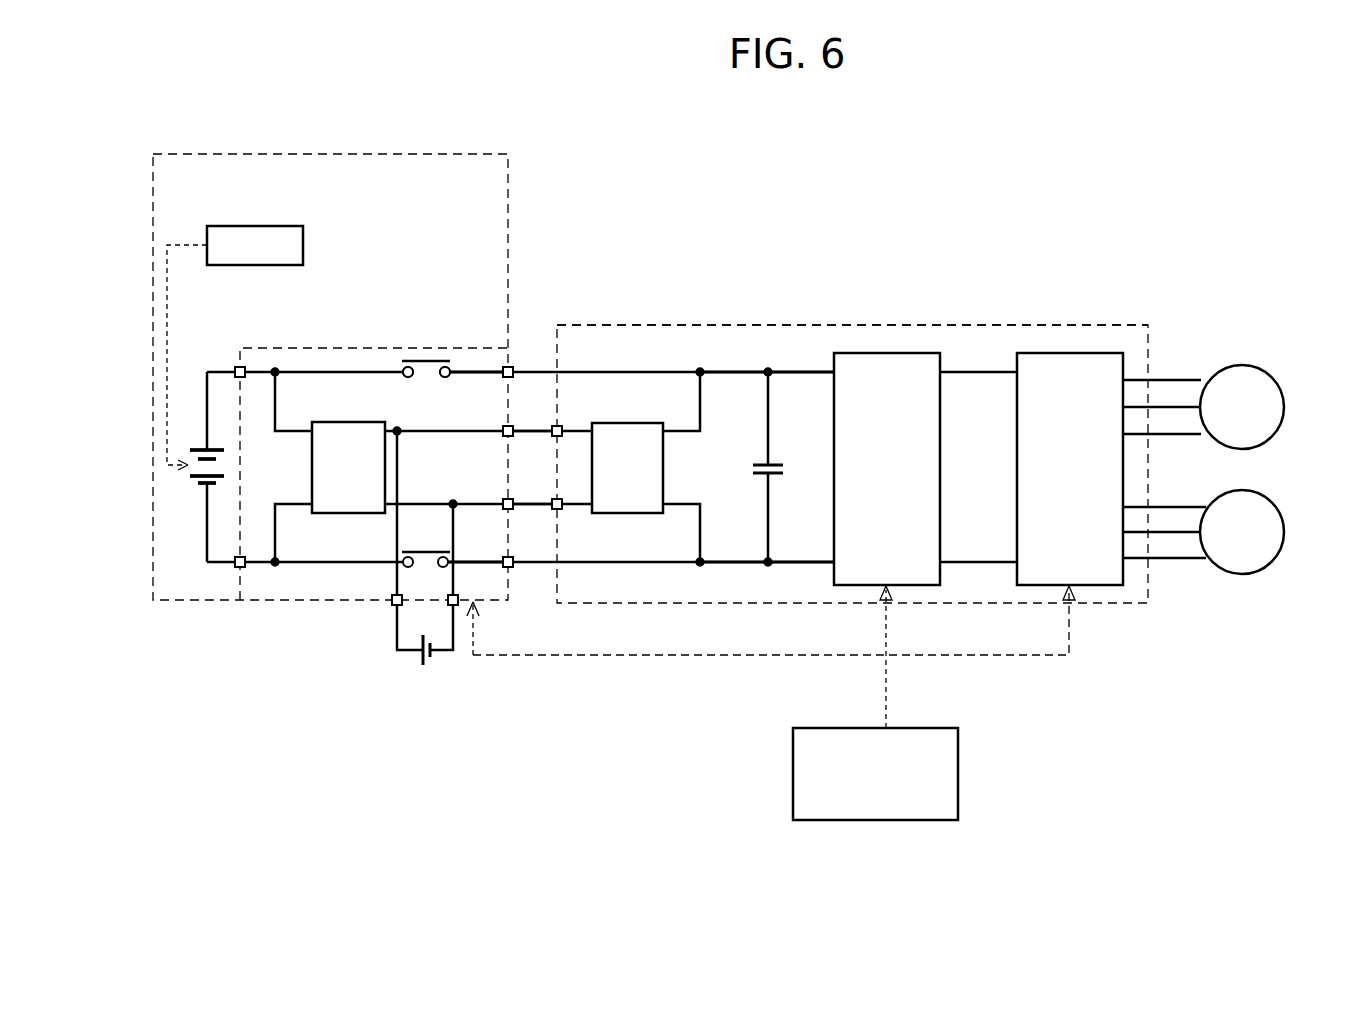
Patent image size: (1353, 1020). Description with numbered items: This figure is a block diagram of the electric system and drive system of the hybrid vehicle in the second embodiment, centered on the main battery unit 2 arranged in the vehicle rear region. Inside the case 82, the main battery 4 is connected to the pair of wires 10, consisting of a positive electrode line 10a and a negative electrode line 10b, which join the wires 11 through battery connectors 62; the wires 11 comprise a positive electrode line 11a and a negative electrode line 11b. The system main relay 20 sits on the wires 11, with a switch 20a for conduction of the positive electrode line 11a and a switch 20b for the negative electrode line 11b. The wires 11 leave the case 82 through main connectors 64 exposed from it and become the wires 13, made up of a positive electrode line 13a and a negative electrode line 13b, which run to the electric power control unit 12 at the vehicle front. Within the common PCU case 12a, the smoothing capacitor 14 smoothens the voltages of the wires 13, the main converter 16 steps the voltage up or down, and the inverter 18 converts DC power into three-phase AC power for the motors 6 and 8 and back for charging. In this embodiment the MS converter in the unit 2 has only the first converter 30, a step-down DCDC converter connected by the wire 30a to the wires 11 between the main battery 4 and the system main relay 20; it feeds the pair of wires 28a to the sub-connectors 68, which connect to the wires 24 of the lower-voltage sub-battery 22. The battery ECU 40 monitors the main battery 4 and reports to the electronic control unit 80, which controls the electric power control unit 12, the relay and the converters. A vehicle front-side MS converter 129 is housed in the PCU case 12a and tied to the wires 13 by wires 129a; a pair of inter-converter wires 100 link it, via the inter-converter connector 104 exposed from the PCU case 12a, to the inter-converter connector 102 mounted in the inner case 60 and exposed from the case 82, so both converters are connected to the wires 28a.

The main battery unit 2 is at (574, 140).
The main battery 4 is at (211, 449).
The motor 6 is at (1254, 373).
The motor 8 is at (1254, 498).
The pair of wires 10 is at (90, 410).
The positive electrode line 10a is at (207, 420).
The negative electrode line 10b is at (207, 510).
The wires 11 is at (503, 224).
The positive electrode line 11a is at (468, 368).
The negative electrode line 11b is at (482, 558).
The electric power control unit 12 is at (936, 305).
The PCU case 12a is at (998, 322).
The pair of wires 13 is at (771, 276).
The positive electrode line 13a is at (782, 370).
The negative electrode line 13b is at (797, 560).
The smoothing capacitor 14 is at (760, 462).
The main converter 16 is at (885, 352).
The inverter 18 is at (1065, 352).
The system main relay 20 is at (368, 296).
The switch 20a is at (423, 360).
The switch 20b is at (433, 548).
The sub-battery 22 is at (418, 664).
The wires 24 is at (450, 627).
The pair of wires 28a is at (392, 528).
The first converter 30 is at (347, 420).
The wire 30a is at (285, 503).
The battery electronic control unit 40 is at (303, 245).
The inner case 60 is at (248, 592).
The battery connector 62 is at (238, 366).
The main connector 64 is at (511, 366).
The sub-connector 68 is at (448, 605).
The electronic control unit 80 is at (958, 772).
The case 82 is at (192, 153).
The inter-converter wires 100 is at (538, 500).
The inter-converter connector 102 is at (512, 437).
The inter-converter connector 104 is at (562, 510).
The vehicle front-side MS converter 129 is at (630, 420).
The wires 129a is at (690, 503).